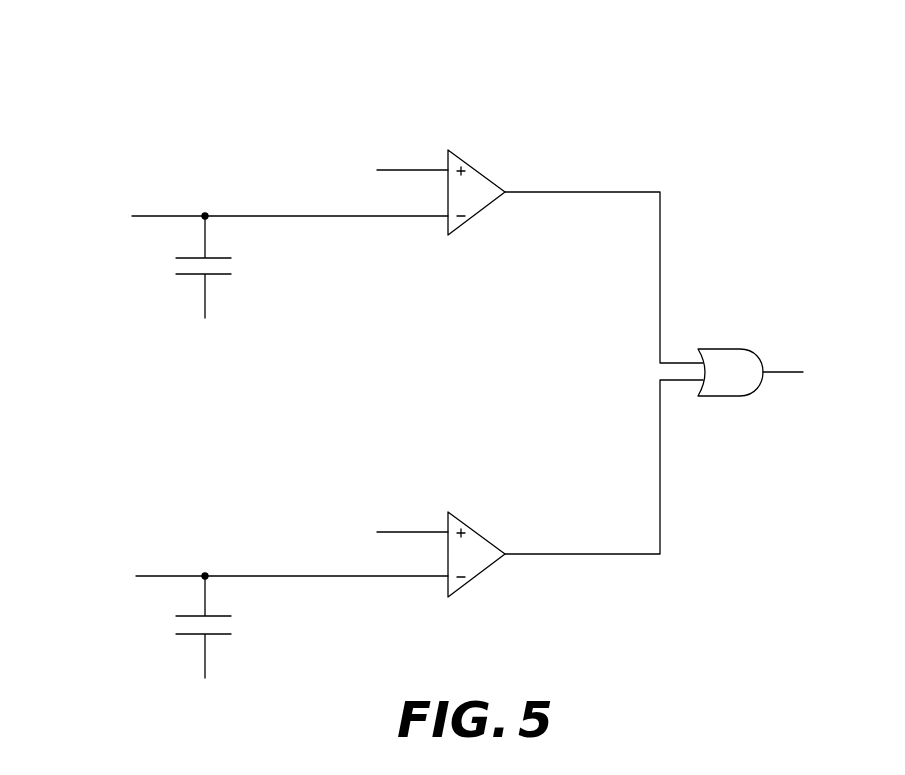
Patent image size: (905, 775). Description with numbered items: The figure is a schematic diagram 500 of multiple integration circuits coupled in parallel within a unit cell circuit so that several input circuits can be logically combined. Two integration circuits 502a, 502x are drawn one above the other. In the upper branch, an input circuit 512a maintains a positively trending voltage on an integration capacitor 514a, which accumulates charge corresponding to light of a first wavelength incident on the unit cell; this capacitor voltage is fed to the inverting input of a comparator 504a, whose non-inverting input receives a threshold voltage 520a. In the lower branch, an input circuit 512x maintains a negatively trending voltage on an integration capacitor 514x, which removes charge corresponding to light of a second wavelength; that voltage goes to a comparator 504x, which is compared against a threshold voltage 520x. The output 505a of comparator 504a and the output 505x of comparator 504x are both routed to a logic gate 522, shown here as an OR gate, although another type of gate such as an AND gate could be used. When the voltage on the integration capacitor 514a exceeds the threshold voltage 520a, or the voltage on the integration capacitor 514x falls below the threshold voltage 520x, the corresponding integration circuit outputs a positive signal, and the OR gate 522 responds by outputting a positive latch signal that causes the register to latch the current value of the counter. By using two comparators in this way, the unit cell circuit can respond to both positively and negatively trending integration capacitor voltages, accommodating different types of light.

The schematic diagram 500 is at (443, 364).
The integration circuit 502a is at (395, 229).
The integration circuit 502x is at (405, 529).
The comparator 504a is at (540, 230).
The comparator 504x is at (540, 590).
The output 505a is at (631, 264).
The output 505x is at (633, 467).
The input circuit 512a is at (249, 233).
The input circuit 512x is at (249, 599).
The integration capacitor 514a is at (270, 267).
The integration capacitor 514x is at (270, 627).
The threshold voltage 520a is at (343, 141).
The threshold voltage 520x is at (315, 509).
The logic gate 522 is at (776, 354).